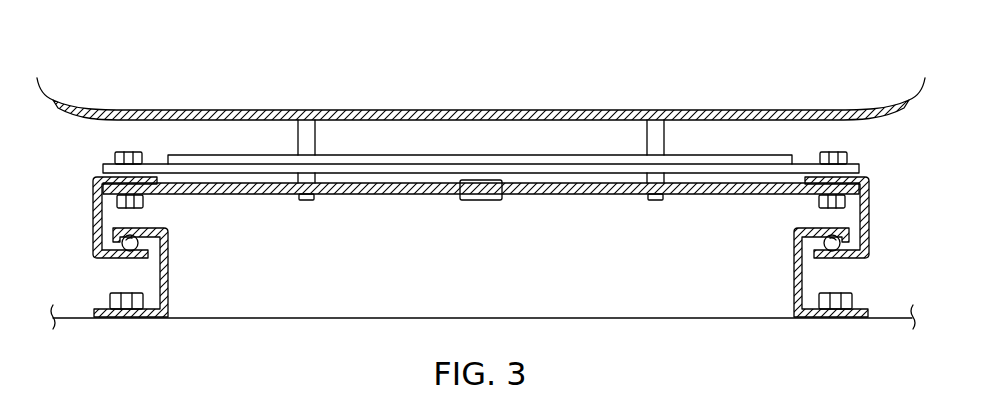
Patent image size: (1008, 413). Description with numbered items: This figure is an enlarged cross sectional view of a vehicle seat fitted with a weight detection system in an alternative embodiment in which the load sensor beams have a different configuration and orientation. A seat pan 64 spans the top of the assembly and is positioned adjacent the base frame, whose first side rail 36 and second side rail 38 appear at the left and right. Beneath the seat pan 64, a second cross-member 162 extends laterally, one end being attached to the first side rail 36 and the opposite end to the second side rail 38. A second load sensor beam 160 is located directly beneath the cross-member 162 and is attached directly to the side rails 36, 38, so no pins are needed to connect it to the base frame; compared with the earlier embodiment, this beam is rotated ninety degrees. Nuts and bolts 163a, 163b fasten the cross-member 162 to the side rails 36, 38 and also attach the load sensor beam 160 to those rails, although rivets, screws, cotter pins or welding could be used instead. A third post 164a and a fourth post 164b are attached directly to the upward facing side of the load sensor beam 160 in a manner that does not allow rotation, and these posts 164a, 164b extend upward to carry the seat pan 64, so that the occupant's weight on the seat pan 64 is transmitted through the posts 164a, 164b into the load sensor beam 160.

The first side rail 36 is at (92, 207).
The second side rail 38 is at (872, 210).
The seat pan 64 is at (173, 108).
The second load sensor beam 160 is at (258, 195).
The second cross-member 162 is at (382, 158).
The nut and bolt 163a is at (142, 152).
The nut and bolt 163b is at (818, 155).
The third post 164a is at (298, 135).
The fourth post 164b is at (665, 137).